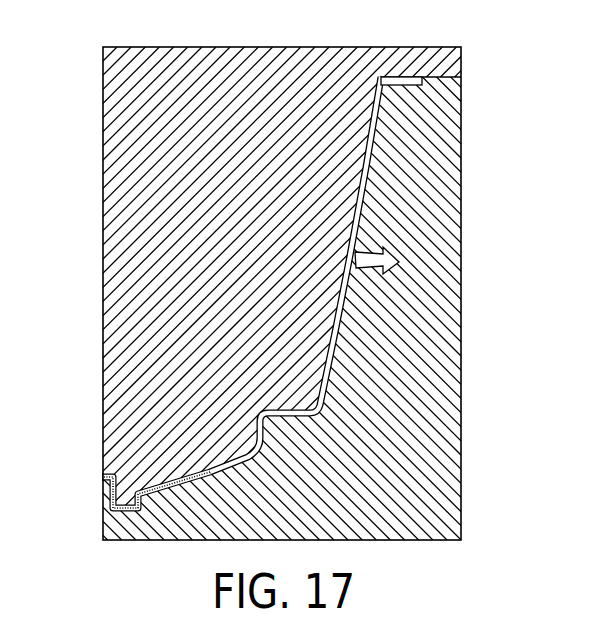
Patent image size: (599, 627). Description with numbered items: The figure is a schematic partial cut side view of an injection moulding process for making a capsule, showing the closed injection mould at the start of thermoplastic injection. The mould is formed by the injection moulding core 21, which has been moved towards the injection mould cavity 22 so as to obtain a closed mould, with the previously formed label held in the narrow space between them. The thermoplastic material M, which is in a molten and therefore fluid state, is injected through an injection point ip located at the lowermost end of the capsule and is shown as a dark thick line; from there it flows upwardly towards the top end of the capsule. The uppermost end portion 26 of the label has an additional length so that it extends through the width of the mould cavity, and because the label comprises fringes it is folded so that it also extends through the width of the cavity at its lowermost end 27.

The injection moulding core 21 is at (235, 224).
The injection mould cavity 22 is at (397, 438).
The uppermost end portion 26 is at (380, 77).
The lowermost end 27 is at (261, 418).
The injection point ip is at (103, 477).
The thermoplastic material M is at (170, 493).